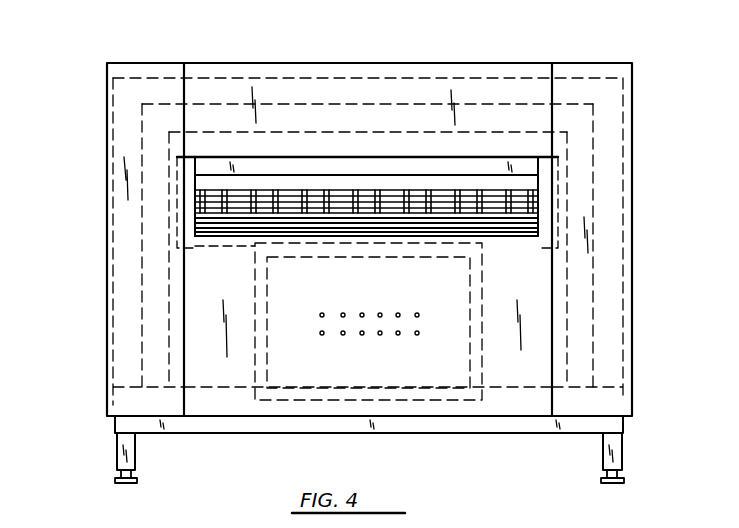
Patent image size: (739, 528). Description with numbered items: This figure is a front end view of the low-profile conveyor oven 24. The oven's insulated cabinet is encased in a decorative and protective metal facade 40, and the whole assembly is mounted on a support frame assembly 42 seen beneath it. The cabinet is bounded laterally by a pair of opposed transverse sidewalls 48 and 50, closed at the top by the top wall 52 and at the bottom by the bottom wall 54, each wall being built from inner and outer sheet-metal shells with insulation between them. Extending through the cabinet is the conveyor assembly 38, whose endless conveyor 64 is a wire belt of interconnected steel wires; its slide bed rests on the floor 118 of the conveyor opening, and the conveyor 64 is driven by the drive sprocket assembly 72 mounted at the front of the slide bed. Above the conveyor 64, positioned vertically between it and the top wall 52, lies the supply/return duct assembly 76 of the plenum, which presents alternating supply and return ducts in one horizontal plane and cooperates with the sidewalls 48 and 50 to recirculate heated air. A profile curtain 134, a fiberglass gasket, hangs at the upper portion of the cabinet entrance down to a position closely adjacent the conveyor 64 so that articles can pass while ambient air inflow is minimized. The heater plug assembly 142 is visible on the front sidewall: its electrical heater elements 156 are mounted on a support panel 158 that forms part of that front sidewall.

The low-profile conveyor oven 24 is at (594, 50).
The top wall 52 is at (268, 103).
The endless conveyor 64 is at (450, 187).
The profile curtain 134 is at (512, 180).
The drive sprocket assembly 72 is at (545, 212).
The metal facade 40 is at (634, 251).
The supply/return duct assembly 76 is at (578, 298).
The transverse sidewall 50 is at (593, 338).
The conveyor assembly 38 is at (180, 230).
The transverse sidewall 48 is at (142, 337).
The floor 118 is at (498, 232).
The heater elements 156 is at (362, 330).
The support panel 158 is at (280, 380).
The heater plug assembly 142 is at (345, 374).
The bottom wall 54 is at (490, 390).
The support frame assembly 42 is at (610, 427).